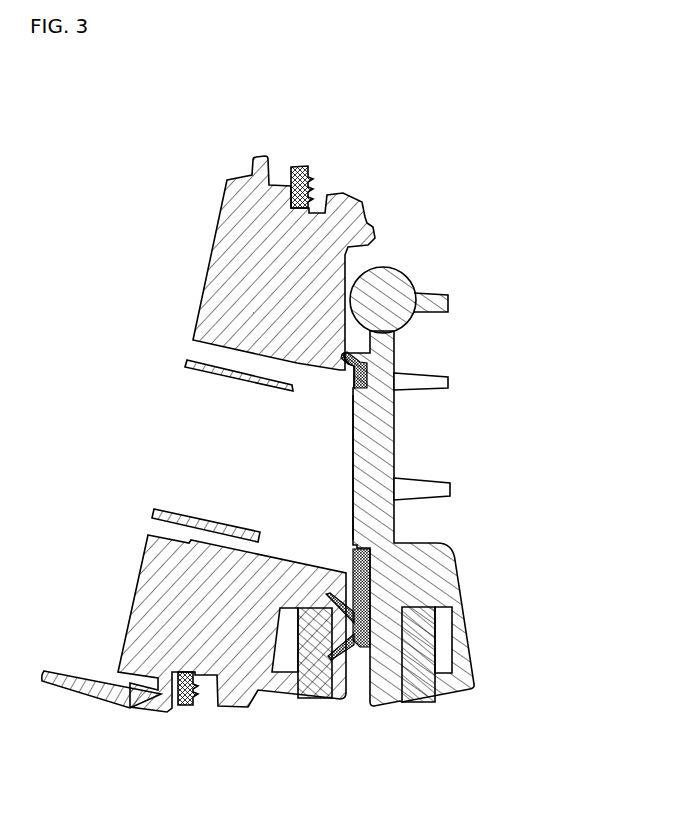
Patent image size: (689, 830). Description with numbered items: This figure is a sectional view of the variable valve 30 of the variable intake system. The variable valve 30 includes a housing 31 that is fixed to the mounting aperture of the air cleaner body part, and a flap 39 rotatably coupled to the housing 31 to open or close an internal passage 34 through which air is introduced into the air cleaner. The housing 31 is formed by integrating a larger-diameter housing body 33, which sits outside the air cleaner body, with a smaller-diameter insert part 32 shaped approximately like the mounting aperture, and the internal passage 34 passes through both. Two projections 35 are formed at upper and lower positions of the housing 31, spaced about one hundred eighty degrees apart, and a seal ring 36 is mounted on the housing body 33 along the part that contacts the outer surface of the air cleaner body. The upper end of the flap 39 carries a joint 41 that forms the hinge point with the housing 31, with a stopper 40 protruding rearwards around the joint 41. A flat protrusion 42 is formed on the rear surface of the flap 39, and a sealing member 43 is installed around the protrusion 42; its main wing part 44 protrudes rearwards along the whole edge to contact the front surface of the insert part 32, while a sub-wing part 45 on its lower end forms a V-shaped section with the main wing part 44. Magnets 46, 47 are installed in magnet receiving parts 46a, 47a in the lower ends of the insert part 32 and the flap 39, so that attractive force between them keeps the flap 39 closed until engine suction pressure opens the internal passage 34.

The variable valve 30 is at (538, 306).
The housing 31 is at (208, 489).
The insert part 32 is at (258, 692).
The housing body 33 is at (127, 707).
The internal passage 34 is at (211, 416).
The projection 35 is at (350, 197).
The seal ring 36 is at (304, 165).
The flap 39 is at (394, 433).
The stopper 40 is at (349, 336).
The joint 41 is at (398, 285).
The protrusion 42 is at (353, 455).
The sealing member 43 is at (372, 594).
The main wing part 44 is at (333, 660).
The sub-wing part 45 is at (342, 572).
The magnet 46 is at (315, 663).
The magnet receiving part 46a is at (332, 655).
The magnet 47 is at (422, 662).
The magnet receiving part 47a is at (403, 630).